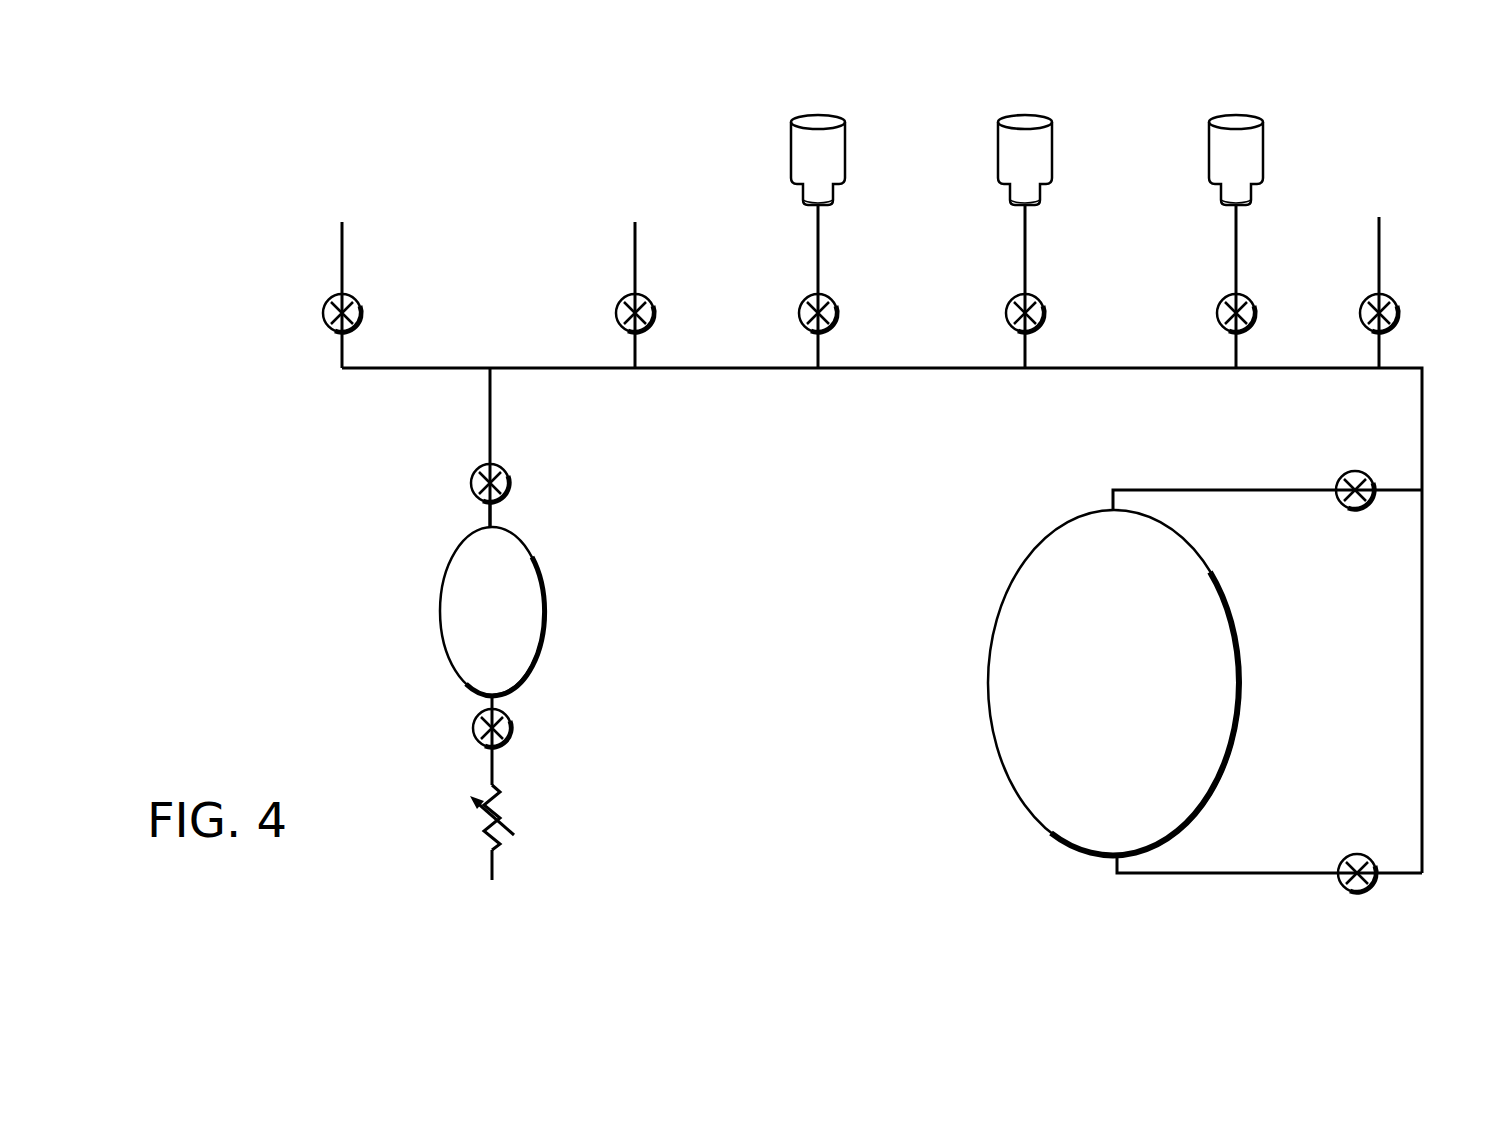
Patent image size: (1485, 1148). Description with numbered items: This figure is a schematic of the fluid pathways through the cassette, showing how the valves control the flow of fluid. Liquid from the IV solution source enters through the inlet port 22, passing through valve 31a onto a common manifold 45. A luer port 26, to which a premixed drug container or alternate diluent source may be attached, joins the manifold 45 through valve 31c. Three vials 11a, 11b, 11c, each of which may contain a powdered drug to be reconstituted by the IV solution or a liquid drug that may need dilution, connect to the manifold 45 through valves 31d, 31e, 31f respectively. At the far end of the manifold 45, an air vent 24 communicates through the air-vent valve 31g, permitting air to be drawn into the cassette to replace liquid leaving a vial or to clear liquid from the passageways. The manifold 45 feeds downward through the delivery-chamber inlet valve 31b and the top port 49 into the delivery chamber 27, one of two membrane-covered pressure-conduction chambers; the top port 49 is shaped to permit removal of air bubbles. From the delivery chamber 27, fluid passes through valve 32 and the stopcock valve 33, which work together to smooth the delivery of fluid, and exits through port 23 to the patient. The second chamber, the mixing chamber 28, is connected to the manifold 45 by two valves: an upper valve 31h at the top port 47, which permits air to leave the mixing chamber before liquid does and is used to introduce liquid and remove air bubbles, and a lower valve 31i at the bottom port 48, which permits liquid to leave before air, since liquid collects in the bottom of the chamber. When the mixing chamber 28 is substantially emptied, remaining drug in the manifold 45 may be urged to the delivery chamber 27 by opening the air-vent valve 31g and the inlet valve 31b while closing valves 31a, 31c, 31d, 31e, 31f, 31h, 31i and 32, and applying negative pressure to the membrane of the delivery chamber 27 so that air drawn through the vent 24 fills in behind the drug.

The vial 11a is at (845, 155).
The vial 11b is at (1052, 155).
The vial 11c is at (1263, 155).
The port 22 is at (342, 255).
The port 23 is at (492, 862).
The air vent 24 is at (1379, 252).
The luer port 26 is at (635, 255).
The delivery chamber 27 is at (574, 611).
The mixing chamber 28 is at (1114, 683).
The valve 31a is at (362, 313).
The delivery-chamber inlet valve 31b is at (510, 483).
The valve 31c is at (655, 313).
The valve 31d is at (838, 313).
The valve 31e is at (1045, 313).
The valve 31f is at (1256, 313).
The air-vent valve 31g is at (1399, 313).
The upper valve 31h is at (1355, 510).
The lower valve 31i is at (1357, 893).
The valve 32 is at (512, 728).
The stopcock valve 33 is at (498, 800).
The manifold 45 is at (925, 368).
The top port 47 is at (1110, 500).
The bottom port 48 is at (1113, 862).
The top port 49 is at (490, 512).